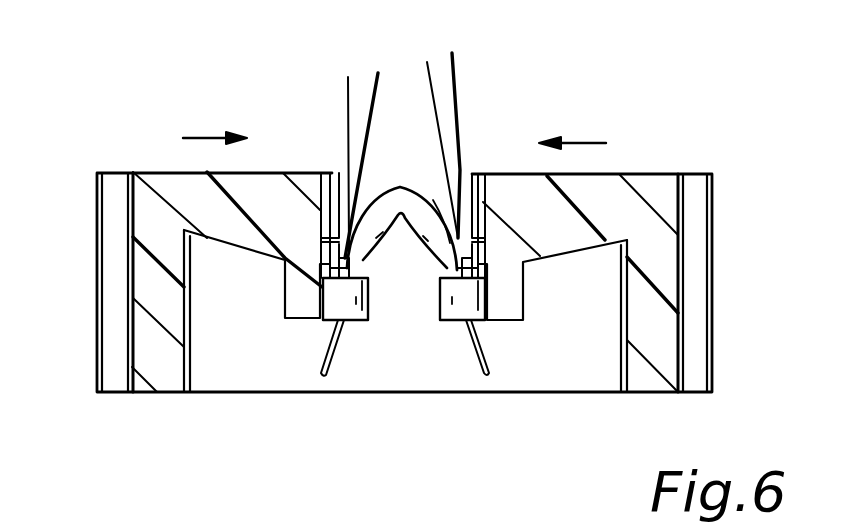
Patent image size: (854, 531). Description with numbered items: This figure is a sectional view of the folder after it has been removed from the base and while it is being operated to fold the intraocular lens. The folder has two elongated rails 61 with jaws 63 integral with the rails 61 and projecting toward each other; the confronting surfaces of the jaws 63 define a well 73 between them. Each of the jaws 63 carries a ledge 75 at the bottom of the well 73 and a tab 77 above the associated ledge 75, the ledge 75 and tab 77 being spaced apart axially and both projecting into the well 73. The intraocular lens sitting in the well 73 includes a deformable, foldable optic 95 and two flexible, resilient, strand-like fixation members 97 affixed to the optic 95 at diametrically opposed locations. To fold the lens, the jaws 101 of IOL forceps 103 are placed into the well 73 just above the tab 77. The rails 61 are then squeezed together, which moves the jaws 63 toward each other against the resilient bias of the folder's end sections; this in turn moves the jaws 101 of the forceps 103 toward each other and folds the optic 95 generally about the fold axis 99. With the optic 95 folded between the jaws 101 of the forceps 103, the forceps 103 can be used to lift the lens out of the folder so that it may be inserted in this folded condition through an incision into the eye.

The elongated rails 61 is at (143, 280).
The jaws 63 is at (188, 190).
The well 73 is at (340, 173).
The ledge 75 is at (363, 322).
The tab 77 is at (338, 245).
The optic 95 is at (400, 190).
The fixation members 97 is at (320, 366).
The fold axis 99 is at (398, 268).
The jaws of IOL forceps 101 is at (472, 200).
The IOL forceps 103 is at (458, 104).